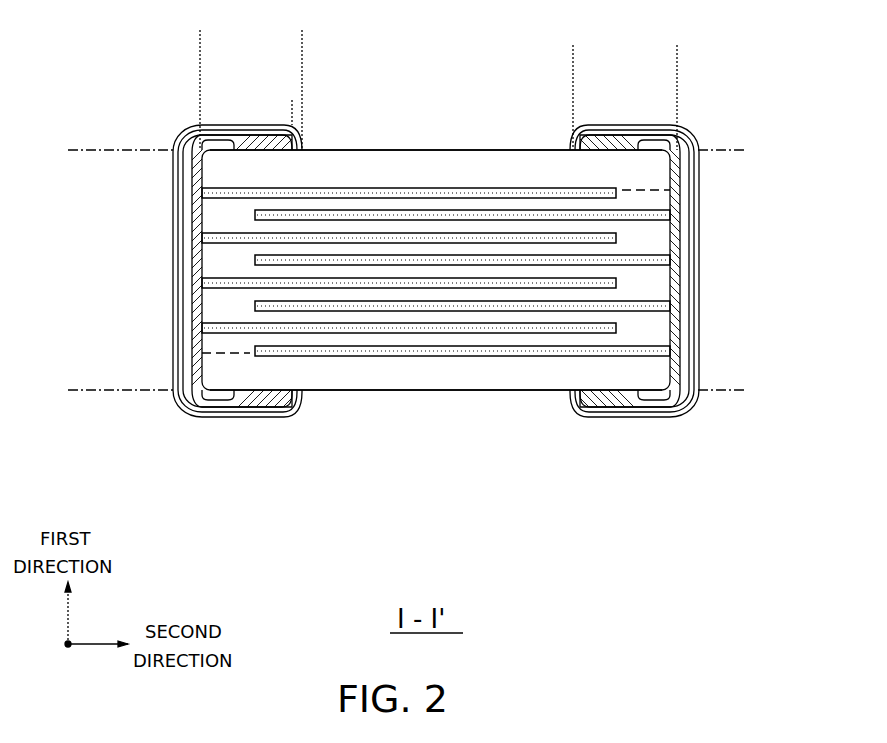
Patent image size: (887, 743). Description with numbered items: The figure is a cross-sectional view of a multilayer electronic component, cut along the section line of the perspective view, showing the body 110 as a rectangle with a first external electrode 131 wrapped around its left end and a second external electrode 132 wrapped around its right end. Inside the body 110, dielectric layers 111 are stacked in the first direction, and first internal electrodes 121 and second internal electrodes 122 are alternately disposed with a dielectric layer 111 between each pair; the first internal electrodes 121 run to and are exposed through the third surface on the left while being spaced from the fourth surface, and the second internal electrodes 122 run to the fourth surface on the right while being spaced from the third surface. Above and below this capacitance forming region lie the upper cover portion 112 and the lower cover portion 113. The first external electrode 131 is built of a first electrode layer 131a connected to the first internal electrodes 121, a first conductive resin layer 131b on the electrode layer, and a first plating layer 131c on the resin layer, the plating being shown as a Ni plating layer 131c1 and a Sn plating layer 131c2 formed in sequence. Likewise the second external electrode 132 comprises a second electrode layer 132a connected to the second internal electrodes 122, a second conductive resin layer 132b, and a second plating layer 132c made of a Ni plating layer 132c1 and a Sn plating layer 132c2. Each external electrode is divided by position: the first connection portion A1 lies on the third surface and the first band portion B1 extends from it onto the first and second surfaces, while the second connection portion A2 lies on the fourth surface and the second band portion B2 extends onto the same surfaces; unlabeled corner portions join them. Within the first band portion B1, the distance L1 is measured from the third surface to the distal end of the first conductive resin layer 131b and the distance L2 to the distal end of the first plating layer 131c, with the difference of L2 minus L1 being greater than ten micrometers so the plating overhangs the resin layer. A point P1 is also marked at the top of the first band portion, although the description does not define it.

The body 110 is at (372, 149).
The dielectric layer 111 is at (317, 220).
The upper cover portion 112 is at (443, 167).
The lower cover portion 113 is at (431, 378).
The first internal electrode 121 is at (498, 190).
The second internal electrode 122 is at (545, 212).
The first external electrode 131 is at (276, 346).
The first electrode layer 131a is at (203, 407).
The first conductive resin layer 131b is at (228, 402).
The first plating layer 131c is at (287, 326).
The Ni plating layer 131c1 is at (263, 413).
The Sn plating layer 131c2 is at (300, 407).
The second external electrode 132 is at (596, 347).
The second electrode layer 132a is at (665, 402).
The second conductive resin layer 132b is at (644, 400).
The second plating layer 132c is at (584, 326).
The Ni plating layer 132c1 is at (616, 410).
The Sn plating layer 132c2 is at (578, 414).
The point P1 is at (177, 160).
The first connection portion A1 is at (77, 150).
The second connection portion A2 is at (733, 150).
The first band portion B1 is at (302, 35).
The second band portion B2 is at (677, 52).
The distance L1 is at (292, 108).
The distance L2 is at (300, 72).